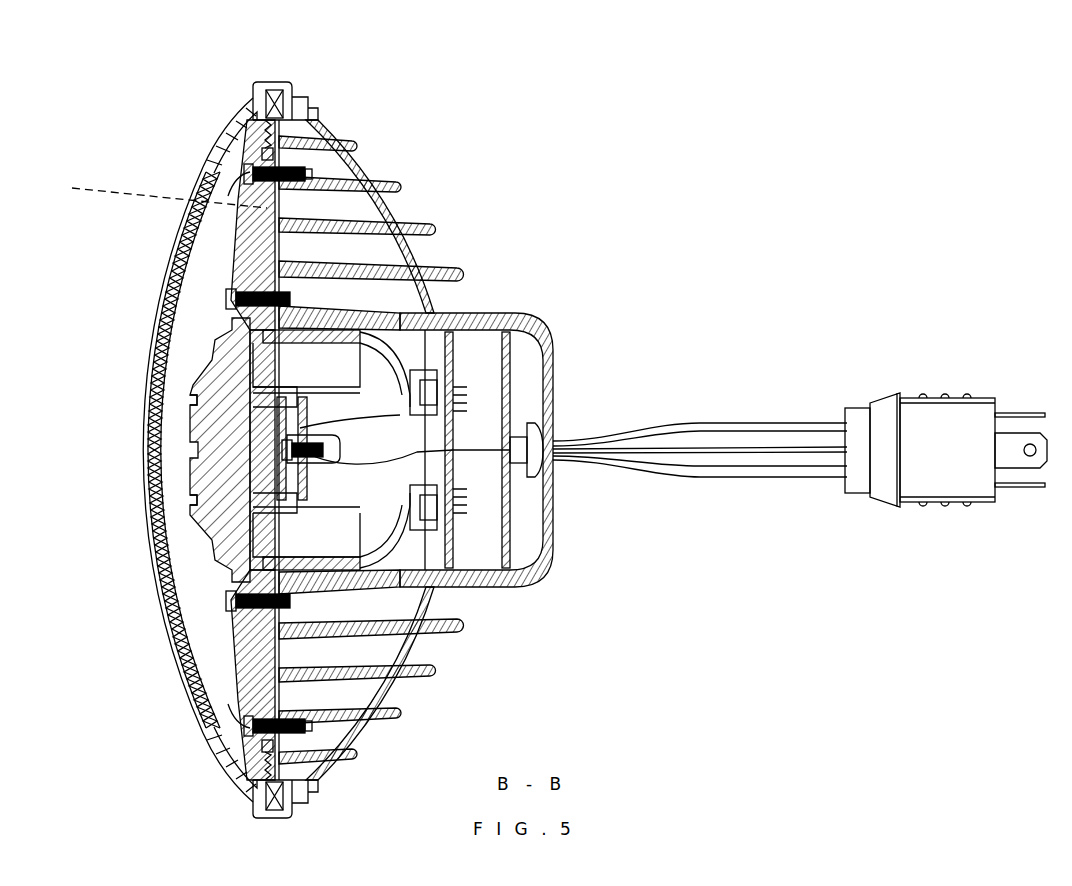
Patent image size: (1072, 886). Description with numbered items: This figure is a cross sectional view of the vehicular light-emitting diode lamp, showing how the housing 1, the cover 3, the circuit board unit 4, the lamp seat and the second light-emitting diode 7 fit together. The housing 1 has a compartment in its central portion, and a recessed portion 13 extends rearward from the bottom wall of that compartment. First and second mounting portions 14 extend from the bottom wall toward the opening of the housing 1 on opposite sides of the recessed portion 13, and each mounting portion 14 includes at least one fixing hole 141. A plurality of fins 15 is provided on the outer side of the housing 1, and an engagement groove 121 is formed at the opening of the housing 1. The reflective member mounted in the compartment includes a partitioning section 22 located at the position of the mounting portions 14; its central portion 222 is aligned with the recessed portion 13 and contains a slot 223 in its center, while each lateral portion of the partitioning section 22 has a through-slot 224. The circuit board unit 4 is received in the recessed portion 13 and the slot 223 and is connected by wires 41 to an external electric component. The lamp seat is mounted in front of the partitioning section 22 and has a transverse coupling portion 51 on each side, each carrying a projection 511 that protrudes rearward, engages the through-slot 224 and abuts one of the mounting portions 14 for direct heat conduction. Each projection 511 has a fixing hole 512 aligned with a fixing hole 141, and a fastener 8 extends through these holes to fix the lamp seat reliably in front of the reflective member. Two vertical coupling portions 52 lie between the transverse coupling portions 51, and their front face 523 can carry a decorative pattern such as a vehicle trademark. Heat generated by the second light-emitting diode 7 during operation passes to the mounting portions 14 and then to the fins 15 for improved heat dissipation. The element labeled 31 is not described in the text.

The housing 1 is at (373, 767).
The cover 3 is at (147, 471).
The circuit board unit 4 is at (520, 346).
The second light-emitting diode 7 is at (266, 434).
The fastener 8 is at (233, 116).
The recessed portion 13 is at (493, 517).
The first and second mounting portions 14 is at (281, 222).
The fins 15 is at (354, 715).
The partitioning section 22 is at (256, 353).
The sealing ring 31 is at (272, 112).
The wires 41 is at (772, 413).
The transverse coupling portion 51 is at (228, 274).
The vertical coupling portion 52 is at (216, 488).
The engagement groove 121 is at (282, 105).
The fixing hole 141 is at (318, 160).
The central portion 222 is at (306, 338).
The slot 223 is at (346, 400).
The through-slot 224 is at (150, 193).
The projection 511 is at (268, 252).
The fixing hole 512 is at (246, 169).
The front face 523 is at (196, 407).